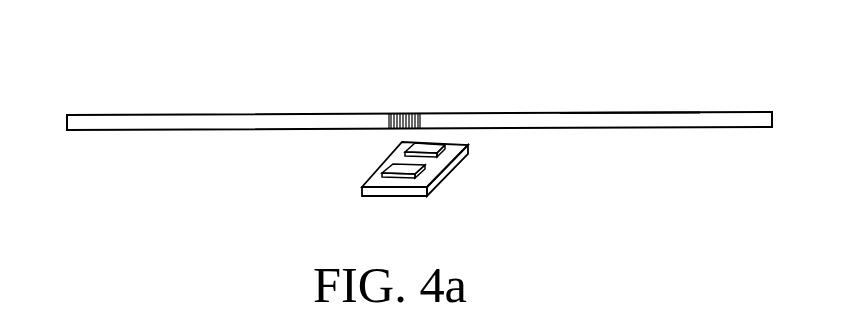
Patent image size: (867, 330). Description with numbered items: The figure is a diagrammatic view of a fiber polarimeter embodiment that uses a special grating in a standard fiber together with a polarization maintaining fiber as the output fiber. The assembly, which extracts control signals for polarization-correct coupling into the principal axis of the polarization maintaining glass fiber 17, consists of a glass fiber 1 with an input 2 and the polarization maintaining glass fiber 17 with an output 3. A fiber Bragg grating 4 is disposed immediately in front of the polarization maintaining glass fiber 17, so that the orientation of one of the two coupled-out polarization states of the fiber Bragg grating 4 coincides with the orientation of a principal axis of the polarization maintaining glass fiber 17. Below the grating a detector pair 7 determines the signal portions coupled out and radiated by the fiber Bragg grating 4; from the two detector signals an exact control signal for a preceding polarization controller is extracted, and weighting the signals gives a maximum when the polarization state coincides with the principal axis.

The glass fiber 1 is at (152, 128).
The input 2 is at (66, 122).
The output 3 is at (773, 117).
The fiber Bragg grating 4 is at (407, 113).
The detector pair 7 is at (372, 198).
The polarization maintaining glass fiber 17 is at (605, 112).